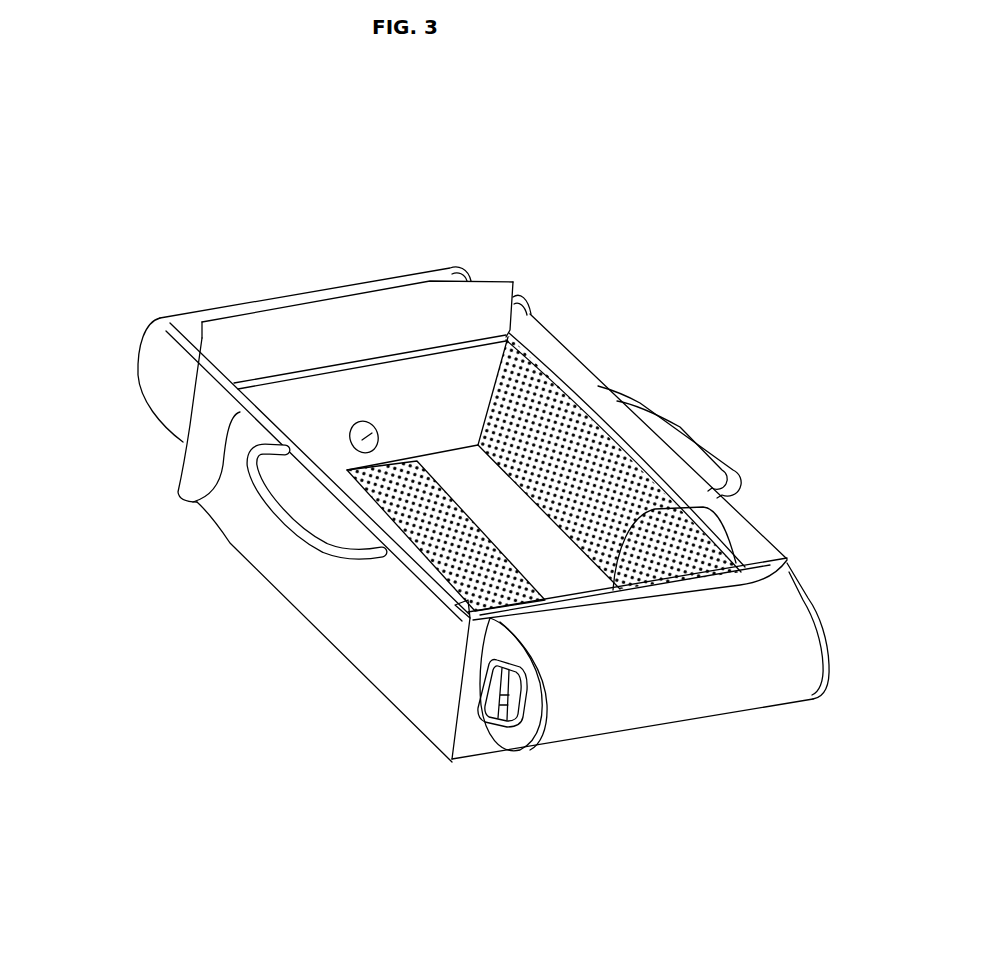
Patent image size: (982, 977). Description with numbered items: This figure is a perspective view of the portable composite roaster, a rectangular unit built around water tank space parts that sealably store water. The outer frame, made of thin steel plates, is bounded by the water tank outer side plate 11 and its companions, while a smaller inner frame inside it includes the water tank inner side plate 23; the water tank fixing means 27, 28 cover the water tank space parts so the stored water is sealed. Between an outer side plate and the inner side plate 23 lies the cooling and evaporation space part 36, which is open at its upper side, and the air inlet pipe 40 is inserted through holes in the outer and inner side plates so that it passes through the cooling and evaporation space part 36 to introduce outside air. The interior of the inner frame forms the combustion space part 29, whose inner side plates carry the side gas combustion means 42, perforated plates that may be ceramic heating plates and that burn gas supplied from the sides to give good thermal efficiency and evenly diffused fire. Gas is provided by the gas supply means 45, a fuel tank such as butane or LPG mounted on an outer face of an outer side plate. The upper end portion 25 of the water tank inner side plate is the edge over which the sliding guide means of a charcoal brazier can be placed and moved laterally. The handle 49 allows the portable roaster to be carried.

The water tank outer side plate 11 is at (387, 587).
The water tank inner side plate 23 is at (461, 380).
The upper end portion of the water tank inner side plate 25 is at (327, 368).
The water tank fixing means 27 is at (185, 502).
The water tank fixing means 28 is at (568, 352).
The combustion space part 29 is at (533, 563).
The cooling and evaporation space part 36 is at (358, 356).
The air inlet pipe 40 is at (378, 436).
The side gas combustion means 42 is at (613, 500).
The gas supply means 45 is at (150, 350).
The handle 49 is at (634, 400).